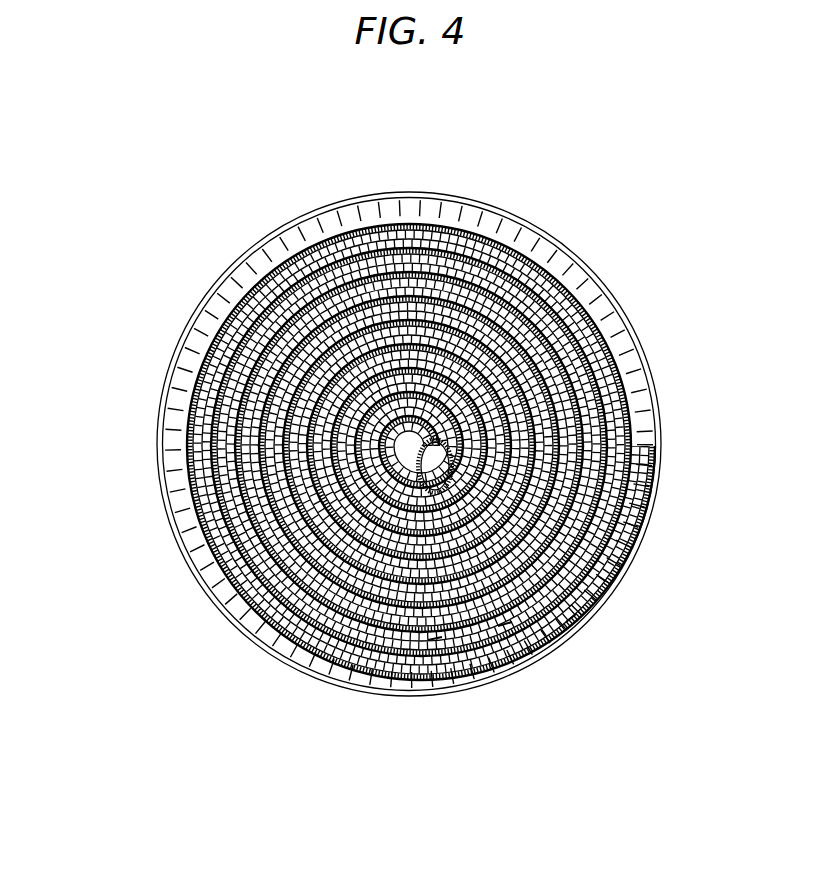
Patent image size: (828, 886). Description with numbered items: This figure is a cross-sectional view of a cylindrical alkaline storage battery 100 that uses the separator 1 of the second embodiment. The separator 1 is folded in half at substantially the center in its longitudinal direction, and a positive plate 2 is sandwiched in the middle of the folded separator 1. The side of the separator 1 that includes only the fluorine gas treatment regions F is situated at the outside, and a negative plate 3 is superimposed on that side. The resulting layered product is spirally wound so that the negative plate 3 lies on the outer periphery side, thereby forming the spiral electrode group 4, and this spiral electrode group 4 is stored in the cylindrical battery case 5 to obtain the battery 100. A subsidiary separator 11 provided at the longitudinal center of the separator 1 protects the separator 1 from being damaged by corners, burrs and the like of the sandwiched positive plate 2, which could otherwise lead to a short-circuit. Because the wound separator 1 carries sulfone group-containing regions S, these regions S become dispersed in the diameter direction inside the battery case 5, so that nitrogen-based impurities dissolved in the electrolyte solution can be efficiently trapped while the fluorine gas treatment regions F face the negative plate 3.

The cylindrical alkaline storage battery 100 is at (620, 226).
The battery case 5 is at (306, 210).
The spiral electrode group 4 is at (78, 402).
The negative plate 3 is at (163, 421).
The separator 1 is at (166, 451).
The positive plate 2 is at (163, 490).
The subsidiary separator 11 is at (226, 600).
The fluorine gas treatment region F is at (301, 650).
The sulfone group-containing region S is at (436, 642).